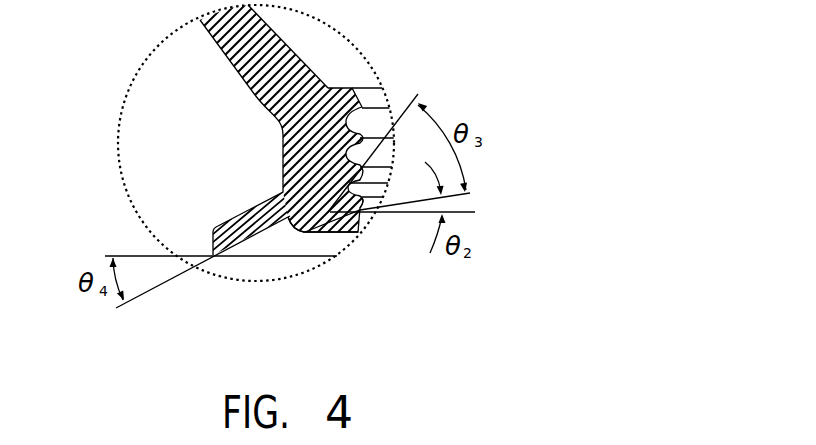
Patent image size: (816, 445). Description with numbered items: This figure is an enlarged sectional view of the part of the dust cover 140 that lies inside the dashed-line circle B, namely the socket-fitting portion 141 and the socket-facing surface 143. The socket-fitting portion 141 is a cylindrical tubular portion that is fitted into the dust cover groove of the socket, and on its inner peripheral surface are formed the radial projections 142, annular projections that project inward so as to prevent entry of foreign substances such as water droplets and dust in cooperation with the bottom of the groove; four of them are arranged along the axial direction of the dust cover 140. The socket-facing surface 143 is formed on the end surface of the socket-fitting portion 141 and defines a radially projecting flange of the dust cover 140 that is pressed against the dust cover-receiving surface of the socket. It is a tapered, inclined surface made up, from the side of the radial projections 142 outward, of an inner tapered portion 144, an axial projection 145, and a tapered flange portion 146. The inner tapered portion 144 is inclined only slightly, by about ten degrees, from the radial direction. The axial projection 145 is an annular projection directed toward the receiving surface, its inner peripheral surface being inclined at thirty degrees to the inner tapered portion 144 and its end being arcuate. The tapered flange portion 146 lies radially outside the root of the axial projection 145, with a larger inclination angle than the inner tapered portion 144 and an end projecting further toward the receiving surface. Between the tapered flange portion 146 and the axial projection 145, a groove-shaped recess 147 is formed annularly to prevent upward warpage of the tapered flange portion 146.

The dashed-line circle B is at (120, 142).
The dust cover 140 is at (232, 75).
The socket-fitting portion 141 is at (282, 150).
The radial projections 142 is at (378, 88).
The socket-facing surface 143 is at (424, 268).
The inner tapered portion 144 is at (337, 213).
The axial projection 145 is at (305, 233).
The tapered flange portion 146 is at (240, 243).
The recess 147 is at (285, 222).